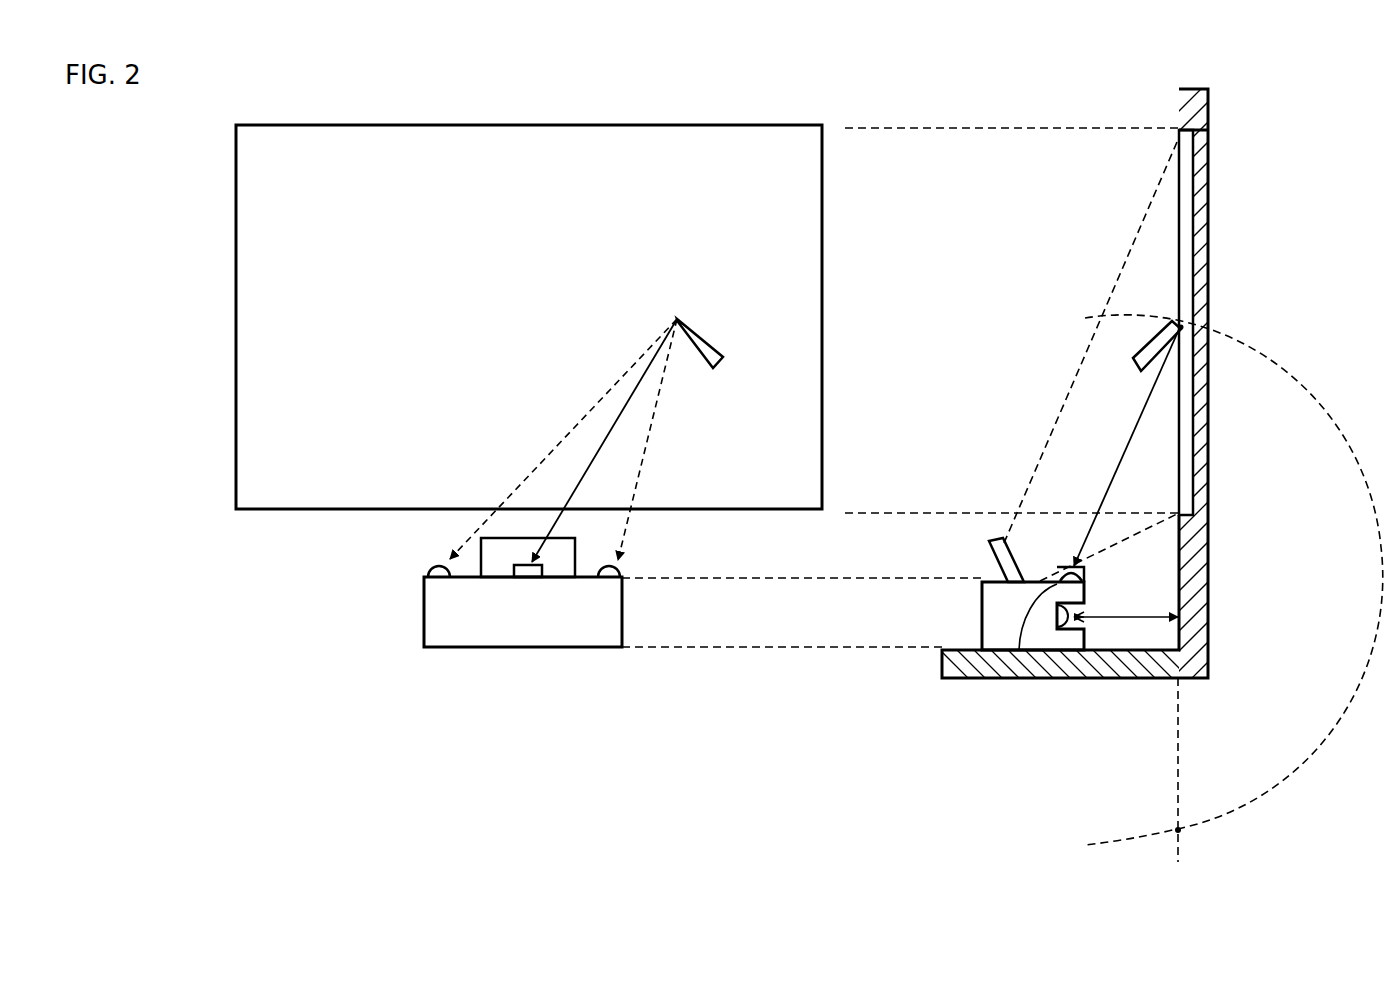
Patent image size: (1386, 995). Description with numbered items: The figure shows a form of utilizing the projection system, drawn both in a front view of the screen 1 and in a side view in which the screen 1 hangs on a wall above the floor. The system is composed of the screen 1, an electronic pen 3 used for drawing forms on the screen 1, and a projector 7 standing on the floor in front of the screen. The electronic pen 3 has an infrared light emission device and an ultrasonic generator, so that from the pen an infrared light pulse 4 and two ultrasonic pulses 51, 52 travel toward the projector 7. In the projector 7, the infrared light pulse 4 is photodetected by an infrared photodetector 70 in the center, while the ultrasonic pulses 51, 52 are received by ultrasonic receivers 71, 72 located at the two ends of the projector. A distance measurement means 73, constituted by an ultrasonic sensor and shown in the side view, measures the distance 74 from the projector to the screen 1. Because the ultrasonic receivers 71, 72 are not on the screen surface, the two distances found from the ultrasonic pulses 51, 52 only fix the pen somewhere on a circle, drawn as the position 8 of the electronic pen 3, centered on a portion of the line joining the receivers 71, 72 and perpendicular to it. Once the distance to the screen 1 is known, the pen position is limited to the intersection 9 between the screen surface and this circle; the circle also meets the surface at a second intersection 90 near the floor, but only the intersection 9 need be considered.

The screen 1 is at (715, 126).
The electronic pen 3 is at (722, 355).
The infrared light pulse 4 is at (625, 385).
The projector 7 is at (423, 612).
The position of electronic pen 8 is at (1325, 415).
The intersection 9 is at (1207, 317).
The ultrasonic pulse 51 is at (547, 455).
The ultrasonic pulse 52 is at (657, 398).
The infrared photodetector 70 is at (537, 580).
The ultrasonic receiver 71 is at (440, 580).
The ultrasonic receiver 72 is at (610, 580).
The distance measurement means 73 is at (1070, 630).
The distance to wall 74 is at (1130, 617).
The intersection 90 is at (1178, 830).